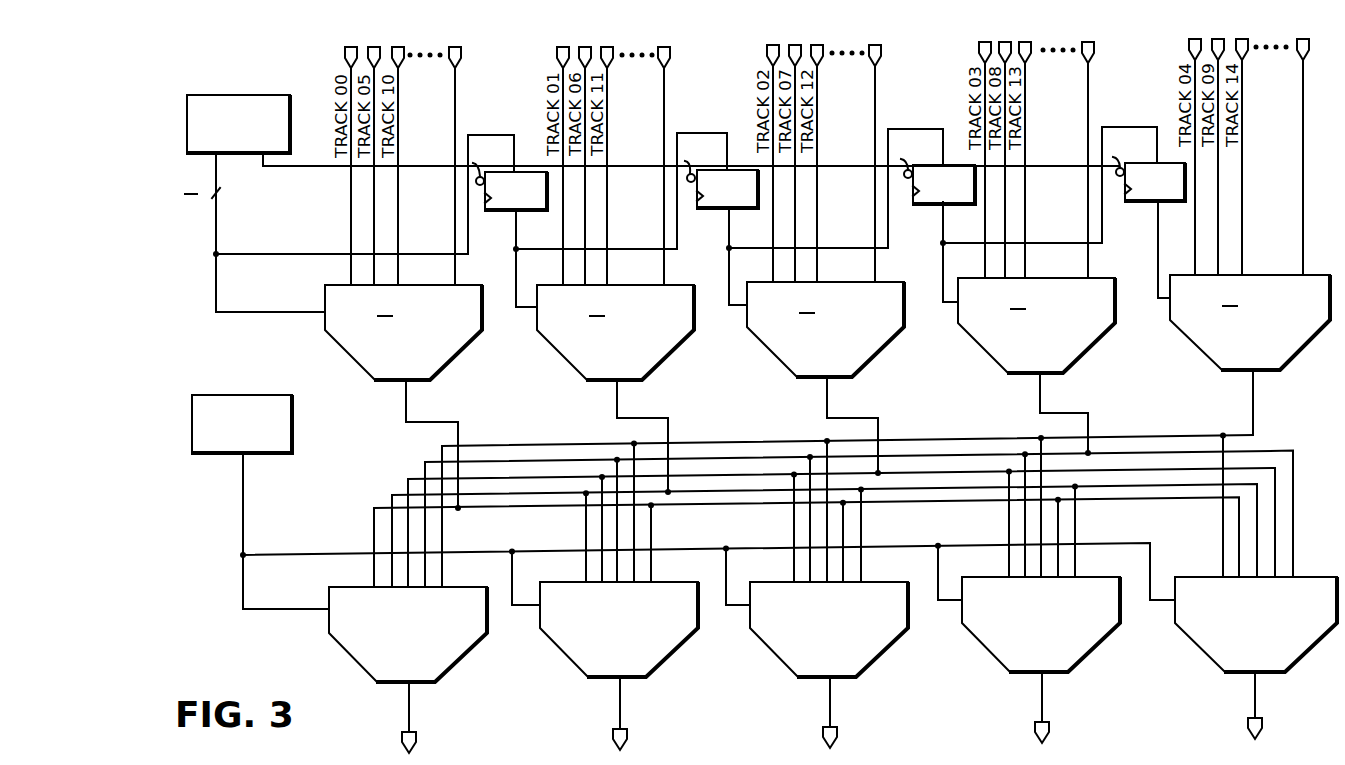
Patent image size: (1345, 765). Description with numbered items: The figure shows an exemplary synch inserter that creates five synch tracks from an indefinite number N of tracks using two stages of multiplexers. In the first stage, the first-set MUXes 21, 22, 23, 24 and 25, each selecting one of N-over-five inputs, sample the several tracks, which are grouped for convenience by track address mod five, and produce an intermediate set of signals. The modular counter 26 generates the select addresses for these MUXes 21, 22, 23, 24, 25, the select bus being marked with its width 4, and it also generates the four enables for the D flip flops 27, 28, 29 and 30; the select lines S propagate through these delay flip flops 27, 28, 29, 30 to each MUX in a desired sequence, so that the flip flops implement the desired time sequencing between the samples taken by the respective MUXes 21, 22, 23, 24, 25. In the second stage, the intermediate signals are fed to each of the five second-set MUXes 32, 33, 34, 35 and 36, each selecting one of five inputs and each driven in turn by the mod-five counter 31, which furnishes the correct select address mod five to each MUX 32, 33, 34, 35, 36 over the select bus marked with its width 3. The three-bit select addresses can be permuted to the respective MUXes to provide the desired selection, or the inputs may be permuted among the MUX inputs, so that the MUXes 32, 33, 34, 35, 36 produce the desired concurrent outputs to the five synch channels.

The 3-bit select bus from MOD 5 counter 3 is at (247, 486).
The 4-bit output bus from modular counter 4 is at (305, 160).
The N/5-to-1 MUX 21 is at (376, 364).
The N/5-to-1 MUX 22 is at (578, 354).
The N/5-to-1 MUX 23 is at (792, 355).
The N/5-to-1 MUX 24 is at (1002, 348).
The N/5-to-1 MUX 25 is at (1208, 337).
The modular counter 26 is at (264, 101).
The D flip flop 27 is at (507, 208).
The D flip flop 28 is at (713, 203).
The D flip flop 29 is at (932, 198).
The D flip flop 30 is at (1150, 196).
The mod 5 counter 31 is at (283, 443).
The 5-to-1 MUX 32 is at (358, 647).
The 5-to-1 MUX 33 is at (569, 643).
The 5-to-1 MUX 34 is at (790, 638).
The 5-to-1 MUX 35 is at (1003, 640).
The 5-to-1 MUX 36 is at (1211, 635).